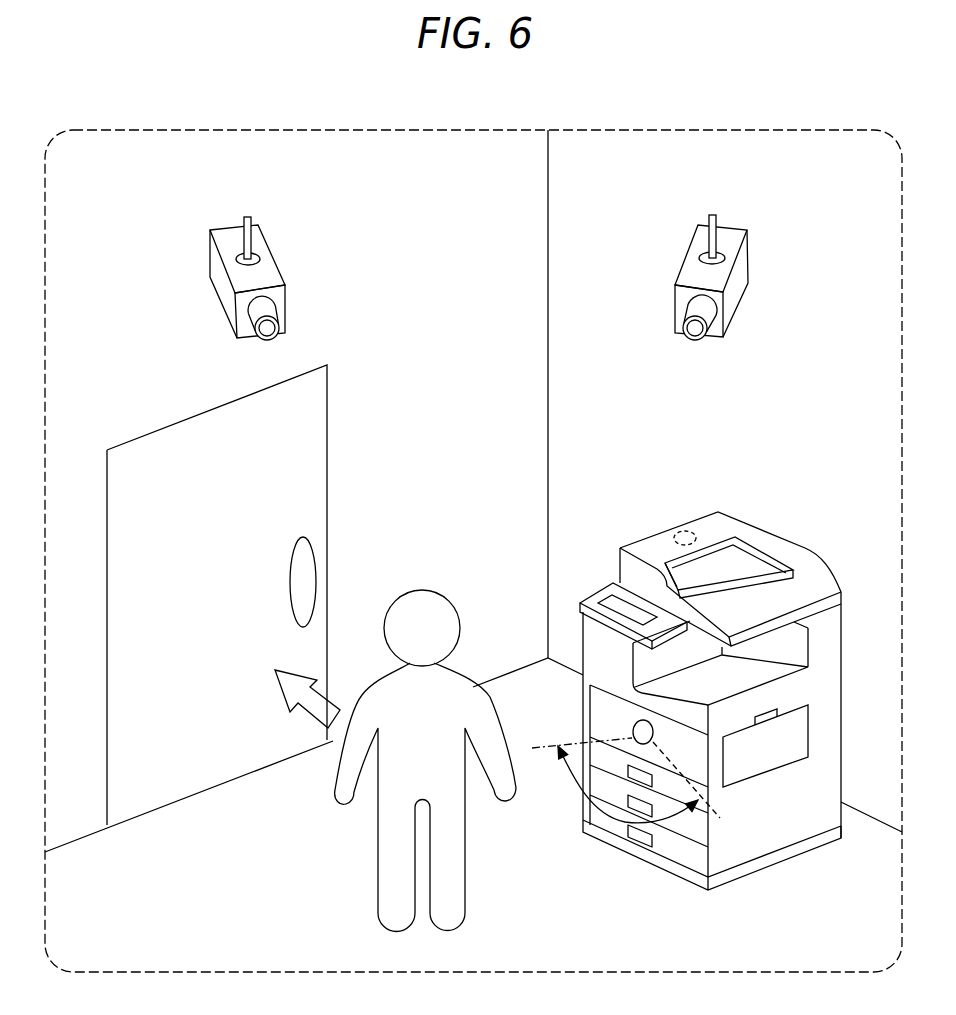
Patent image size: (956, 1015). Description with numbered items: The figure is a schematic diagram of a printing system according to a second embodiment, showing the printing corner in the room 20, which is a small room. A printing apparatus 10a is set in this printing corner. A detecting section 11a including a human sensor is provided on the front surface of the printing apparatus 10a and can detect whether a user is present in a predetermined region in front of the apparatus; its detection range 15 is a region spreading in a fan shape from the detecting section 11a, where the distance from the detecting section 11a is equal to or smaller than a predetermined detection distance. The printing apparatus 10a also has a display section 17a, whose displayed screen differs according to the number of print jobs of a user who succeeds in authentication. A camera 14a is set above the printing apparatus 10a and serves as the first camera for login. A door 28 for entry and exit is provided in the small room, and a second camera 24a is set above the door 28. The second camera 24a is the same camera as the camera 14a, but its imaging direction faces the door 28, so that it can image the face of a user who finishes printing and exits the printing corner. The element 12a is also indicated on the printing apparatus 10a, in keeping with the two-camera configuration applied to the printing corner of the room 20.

The room 20 is at (475, 128).
The second camera 24a is at (285, 258).
The camera 14a is at (675, 257).
The door 28 is at (315, 483).
The printing apparatus 10a is at (678, 680).
The microphone 12a is at (682, 526).
The display section 17a is at (613, 607).
The detecting section 11a is at (635, 725).
The detection range 15 is at (600, 815).